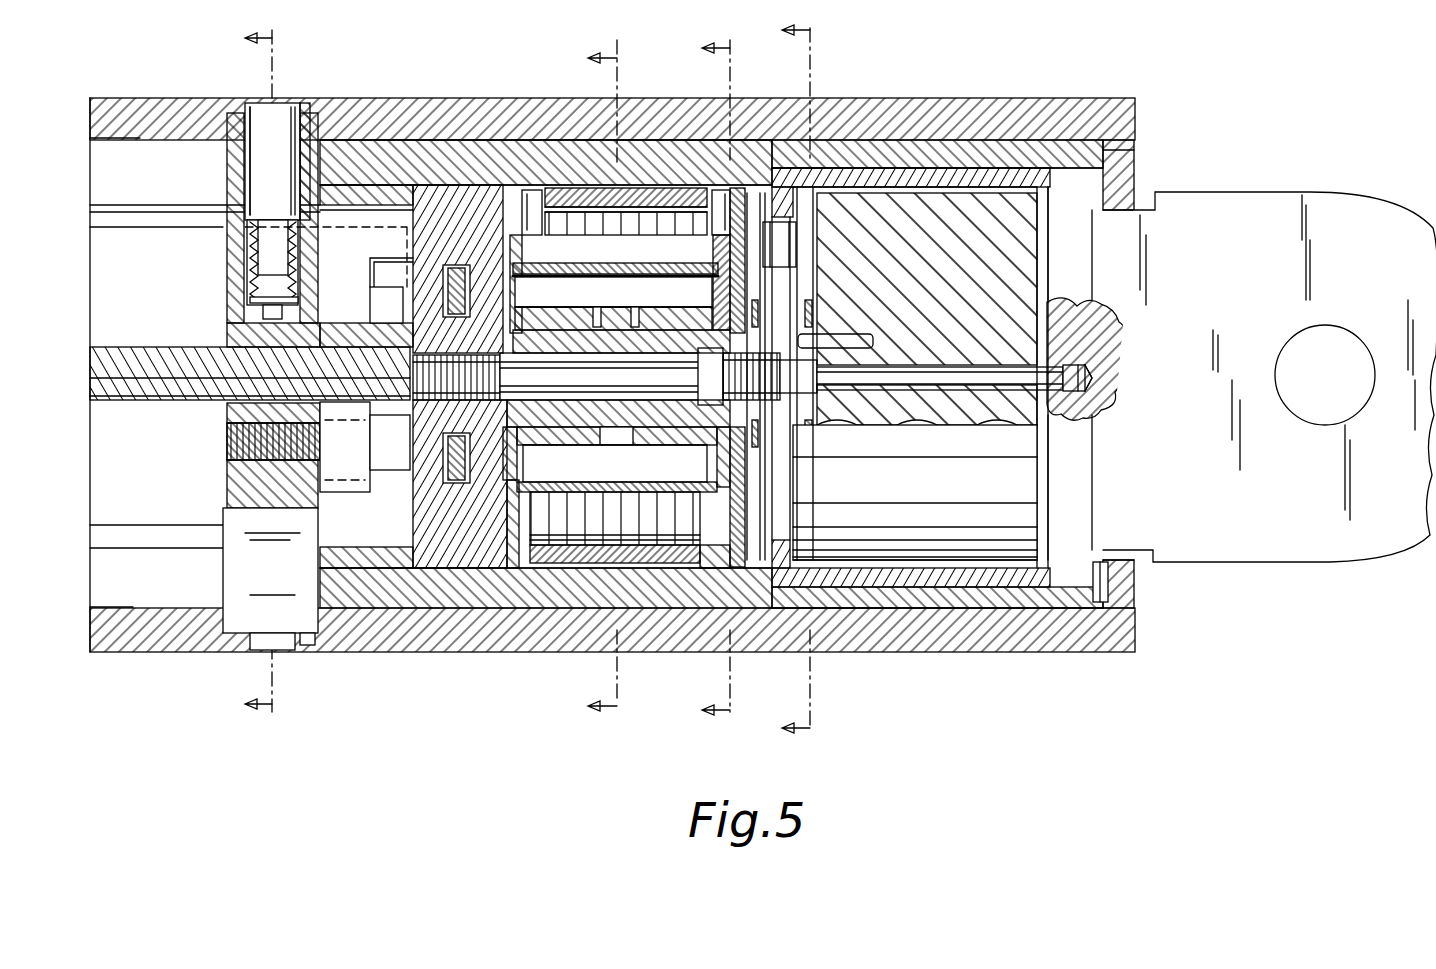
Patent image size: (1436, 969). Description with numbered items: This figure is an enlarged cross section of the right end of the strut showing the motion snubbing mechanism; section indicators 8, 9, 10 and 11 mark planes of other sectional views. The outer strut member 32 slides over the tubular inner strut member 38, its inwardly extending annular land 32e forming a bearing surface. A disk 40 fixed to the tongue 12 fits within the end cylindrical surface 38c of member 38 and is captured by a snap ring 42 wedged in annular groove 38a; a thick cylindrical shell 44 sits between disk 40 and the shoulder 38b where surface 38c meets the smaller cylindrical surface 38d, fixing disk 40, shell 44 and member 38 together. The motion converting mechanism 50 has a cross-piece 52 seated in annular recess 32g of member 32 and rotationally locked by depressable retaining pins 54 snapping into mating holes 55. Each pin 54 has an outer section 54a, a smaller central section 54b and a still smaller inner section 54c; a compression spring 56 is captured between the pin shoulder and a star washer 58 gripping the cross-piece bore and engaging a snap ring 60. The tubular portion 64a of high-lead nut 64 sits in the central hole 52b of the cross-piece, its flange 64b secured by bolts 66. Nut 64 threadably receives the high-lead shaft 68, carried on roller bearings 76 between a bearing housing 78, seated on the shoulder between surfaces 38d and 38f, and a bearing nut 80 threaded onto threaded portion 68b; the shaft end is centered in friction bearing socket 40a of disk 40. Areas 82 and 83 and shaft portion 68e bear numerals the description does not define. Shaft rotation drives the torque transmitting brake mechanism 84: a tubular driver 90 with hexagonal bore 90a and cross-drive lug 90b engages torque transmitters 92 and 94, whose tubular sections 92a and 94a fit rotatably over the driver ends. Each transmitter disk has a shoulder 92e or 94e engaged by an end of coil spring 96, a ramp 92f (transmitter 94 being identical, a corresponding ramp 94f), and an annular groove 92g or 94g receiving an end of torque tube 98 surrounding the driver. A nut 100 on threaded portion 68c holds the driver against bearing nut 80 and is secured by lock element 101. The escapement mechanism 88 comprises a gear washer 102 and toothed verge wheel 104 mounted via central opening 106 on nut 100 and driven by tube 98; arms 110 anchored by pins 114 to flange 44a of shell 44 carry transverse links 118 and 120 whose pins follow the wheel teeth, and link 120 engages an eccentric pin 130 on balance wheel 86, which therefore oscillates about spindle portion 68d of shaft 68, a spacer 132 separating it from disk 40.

The section line 8- 8 is at (273, 376).
The section line 9- 9 is at (815, 385).
The section line 10- 10 is at (626, 382).
The section line 11- 11 is at (740, 382).
The tongue 12 is at (1318, 558).
The outer strut member 32 is at (1050, 100).
The annular land 32e is at (1134, 150).
The annular recess 32g is at (224, 146).
The inner strut member 38 is at (568, 610).
The annular groove 38a is at (1134, 598).
The annular shoulder 38b is at (790, 604).
The end cylindrical surface 38c is at (993, 152).
The cylindrical surface 38d is at (548, 166).
The cylindrical portion 38f is at (371, 202).
The disk 40 is at (1075, 612).
The friction bearing socket 40a is at (1092, 380).
The snap ring 42 is at (1108, 576).
The cylindrical shell 44 is at (950, 590).
The flange 44a is at (795, 204).
The motion converting mechanism 50 is at (345, 104).
The cross-piece 52 is at (222, 484).
The central hole 52b is at (227, 330).
The retaining pin 54 is at (252, 106).
The outer pin section 54a is at (266, 103).
The central pin section 54b is at (258, 246).
The inner pin section 54c is at (250, 288).
The mating hole 55 is at (302, 104).
The compression spring 56 is at (370, 268).
The retaining washer 58 is at (370, 298).
The snap ring 60 is at (250, 304).
The nut 64 is at (338, 260).
The tubular portion 64a is at (223, 428).
The flange 64b is at (372, 514).
The bolts 66 is at (458, 486).
The shaft 68 is at (118, 402).
The threaded portion 68b is at (478, 357).
The threaded portion 68c is at (800, 394).
The spindle portion 68d is at (995, 392).
The rod shaft section 68e is at (650, 377).
The roller bearings 76 is at (458, 266).
The bearing housing 78 is at (440, 192).
The bearing nut 80 is at (480, 500).
The upper chamber 82 is at (128, 186).
The lower chamber 83 is at (136, 586).
The torque transmitting brake mechanism 84 is at (641, 186).
The balance wheel 86 is at (945, 452).
The escapement mechanism 88 is at (752, 186).
The tubular driver 90 is at (548, 432).
The internal bore 90a is at (578, 342).
The cross-drive lug 90b is at (612, 438).
The torque transmitter 92 is at (540, 486).
The tubular central section 92a is at (503, 400).
The shoulder 92e is at (542, 214).
The ramp 92f is at (505, 568).
The annular groove 92g is at (538, 266).
The torque transmitter 94 is at (745, 474).
The tubular portion 94a is at (676, 330).
The shoulder 94e is at (698, 240).
The winding lower end turns 94f is at (700, 516).
The annular groove 94g is at (706, 446).
The coil spring 96 is at (591, 186).
The torque tube 98 is at (622, 276).
The nut 100 is at (790, 440).
The lock element 101 is at (796, 420).
The gear washer 102 is at (790, 508).
The verge wheel 104 is at (777, 262).
The central opening 106 is at (722, 402).
The arms 110 is at (796, 240).
The pin 114 is at (800, 232).
The link 118 is at (760, 300).
The link 120 is at (800, 322).
The pin 130 is at (873, 341).
The spacer 132 is at (1020, 360).